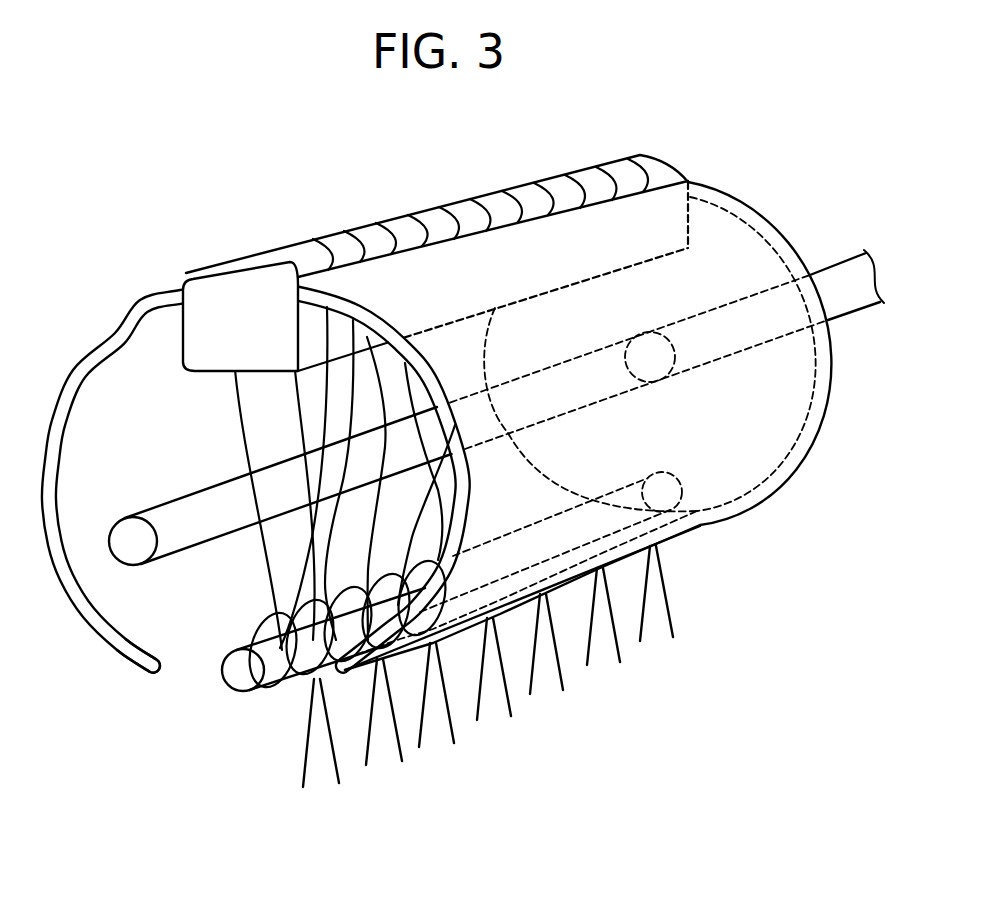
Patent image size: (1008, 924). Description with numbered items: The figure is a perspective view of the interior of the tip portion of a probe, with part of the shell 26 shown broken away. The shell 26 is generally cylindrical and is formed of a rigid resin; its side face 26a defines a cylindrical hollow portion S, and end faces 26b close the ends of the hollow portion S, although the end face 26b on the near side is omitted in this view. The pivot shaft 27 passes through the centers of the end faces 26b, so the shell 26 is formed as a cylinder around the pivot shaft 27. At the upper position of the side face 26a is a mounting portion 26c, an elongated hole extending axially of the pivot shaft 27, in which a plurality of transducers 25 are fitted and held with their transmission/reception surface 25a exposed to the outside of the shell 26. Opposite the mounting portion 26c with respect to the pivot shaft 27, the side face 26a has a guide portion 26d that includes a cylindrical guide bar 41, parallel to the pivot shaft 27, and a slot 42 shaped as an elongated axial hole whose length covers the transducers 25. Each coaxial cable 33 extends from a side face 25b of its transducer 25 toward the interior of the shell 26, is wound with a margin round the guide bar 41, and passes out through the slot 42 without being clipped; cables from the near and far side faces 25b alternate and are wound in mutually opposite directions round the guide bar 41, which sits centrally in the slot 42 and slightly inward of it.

The transducer 25 is at (657, 162).
The transmission/reception surface 25a is at (466, 204).
The side face of transducer 25b is at (318, 313).
The shell 26 is at (757, 240).
The side face 26a is at (786, 429).
The end face 26b is at (791, 383).
The mounting portion 26c is at (713, 197).
The guide portion 26d is at (198, 681).
The pivot shaft 27 is at (182, 507).
The coaxial cable 33 is at (304, 770).
The guide bar 41 is at (244, 678).
The slot 42 is at (163, 680).
The hollow portion S is at (132, 351).